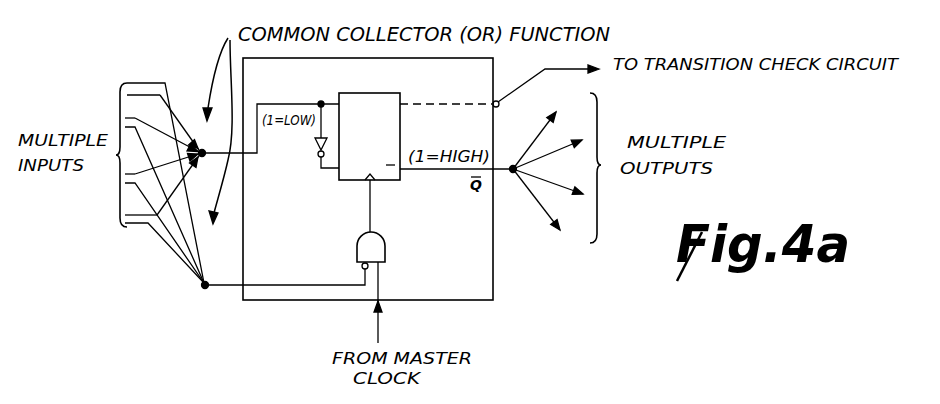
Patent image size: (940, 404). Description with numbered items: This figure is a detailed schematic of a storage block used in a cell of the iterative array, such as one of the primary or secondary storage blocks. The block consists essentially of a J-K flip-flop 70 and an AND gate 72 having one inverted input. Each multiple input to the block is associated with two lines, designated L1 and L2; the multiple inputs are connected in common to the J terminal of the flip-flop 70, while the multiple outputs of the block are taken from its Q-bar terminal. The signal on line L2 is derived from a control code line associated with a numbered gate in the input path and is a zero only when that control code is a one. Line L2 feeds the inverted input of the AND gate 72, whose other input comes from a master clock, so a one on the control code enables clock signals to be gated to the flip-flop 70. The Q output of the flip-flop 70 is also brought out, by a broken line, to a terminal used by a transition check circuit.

The J-K flip-flop 70 is at (383, 183).
The AND gate 72 is at (385, 243).
The first input line L1 is at (269, 130).
The second input line L2 is at (284, 277).
The Q output Q is at (499, 86).